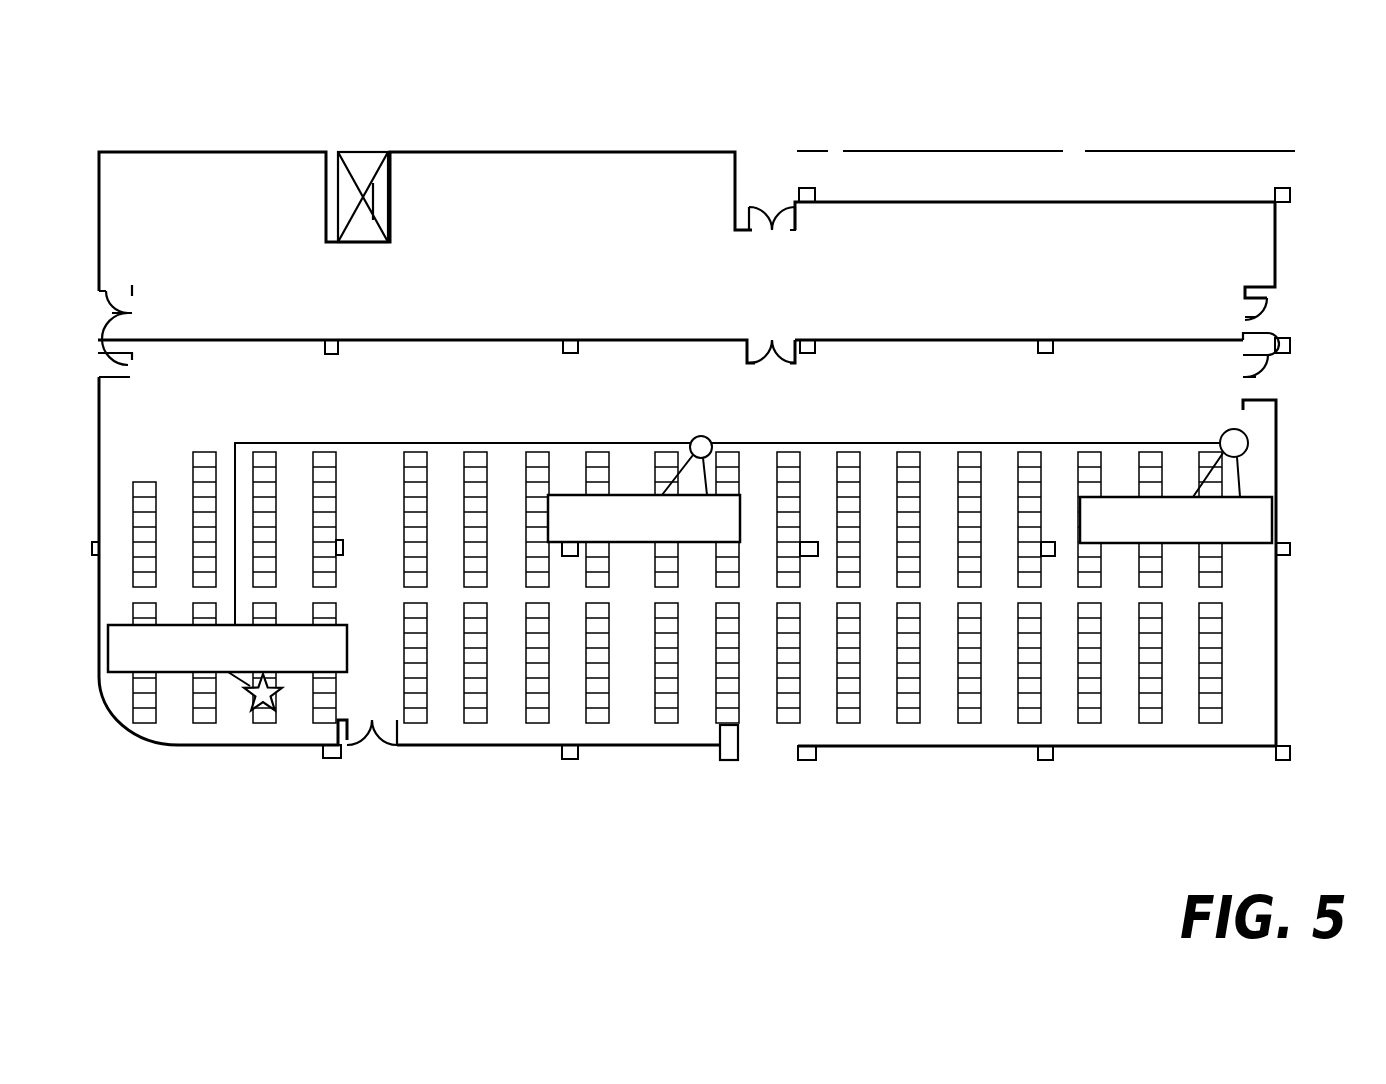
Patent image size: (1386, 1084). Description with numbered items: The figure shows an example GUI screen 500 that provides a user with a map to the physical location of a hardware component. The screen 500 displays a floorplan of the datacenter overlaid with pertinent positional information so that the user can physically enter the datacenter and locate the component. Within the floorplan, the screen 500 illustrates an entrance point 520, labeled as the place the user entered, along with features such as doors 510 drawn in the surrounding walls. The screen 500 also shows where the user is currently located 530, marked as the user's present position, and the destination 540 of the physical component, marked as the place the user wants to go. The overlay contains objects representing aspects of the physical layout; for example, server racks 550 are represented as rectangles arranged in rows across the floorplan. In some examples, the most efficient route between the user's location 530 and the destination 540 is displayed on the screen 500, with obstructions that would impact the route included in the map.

The GUI screen 500 is at (1347, 177).
The doors 510 is at (1268, 372).
The entrance point 520 is at (1249, 444).
The user's current location 530 is at (706, 436).
The destination 540 is at (272, 708).
The server racks 550 is at (656, 472).